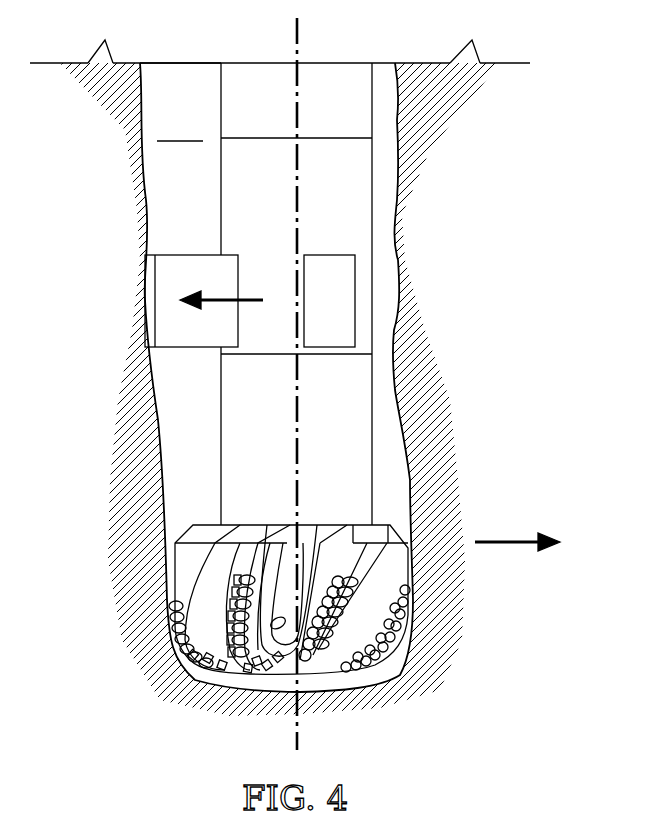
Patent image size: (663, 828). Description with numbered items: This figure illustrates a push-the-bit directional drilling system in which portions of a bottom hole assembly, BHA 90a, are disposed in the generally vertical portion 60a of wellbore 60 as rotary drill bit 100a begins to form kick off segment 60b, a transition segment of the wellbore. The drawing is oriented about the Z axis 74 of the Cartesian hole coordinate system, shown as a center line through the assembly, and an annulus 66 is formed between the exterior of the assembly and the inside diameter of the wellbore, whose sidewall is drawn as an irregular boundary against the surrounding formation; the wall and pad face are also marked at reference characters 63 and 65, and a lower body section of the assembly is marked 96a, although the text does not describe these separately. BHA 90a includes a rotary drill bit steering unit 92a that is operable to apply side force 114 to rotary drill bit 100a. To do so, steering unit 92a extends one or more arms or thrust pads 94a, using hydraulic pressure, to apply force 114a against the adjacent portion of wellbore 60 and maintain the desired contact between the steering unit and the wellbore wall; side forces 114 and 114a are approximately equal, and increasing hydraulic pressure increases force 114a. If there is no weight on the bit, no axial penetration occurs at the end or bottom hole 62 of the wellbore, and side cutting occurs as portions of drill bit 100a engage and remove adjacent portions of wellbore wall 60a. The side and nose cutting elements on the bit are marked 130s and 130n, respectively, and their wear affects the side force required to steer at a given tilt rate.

The wellbore 60 is at (128, 297).
The generally vertical portion of wellbore 60a is at (397, 118).
The kick off segment 60b is at (400, 449).
The end or bottom hole 62 is at (334, 678).
The wellbore sidewall 63 is at (148, 194).
The pad face 65 is at (158, 262).
The annulus 66 is at (164, 90).
The Z axis 74 is at (299, 43).
The BHA 90a is at (221, 90).
The rotary drill bit steering unit 92a is at (373, 244).
The thrust pads 94a is at (197, 348).
The tool body lower section 96a is at (373, 376).
The rotary drill bit 100a is at (182, 537).
The side force 114 is at (505, 540).
The force applied by thrust pads 114a is at (248, 296).
The side cutters 130s is at (170, 630).
The nose cutters 130n is at (287, 682).